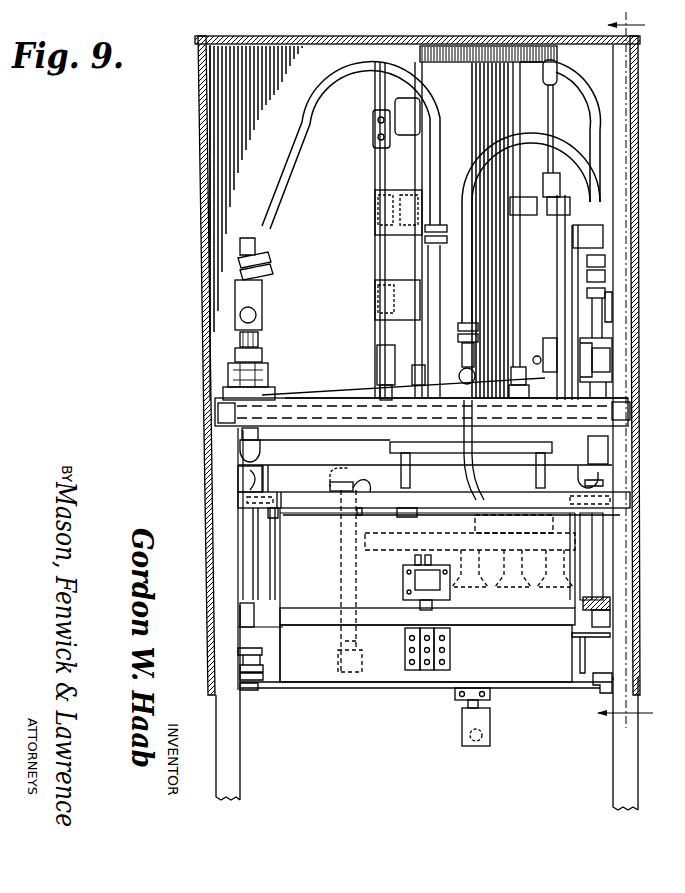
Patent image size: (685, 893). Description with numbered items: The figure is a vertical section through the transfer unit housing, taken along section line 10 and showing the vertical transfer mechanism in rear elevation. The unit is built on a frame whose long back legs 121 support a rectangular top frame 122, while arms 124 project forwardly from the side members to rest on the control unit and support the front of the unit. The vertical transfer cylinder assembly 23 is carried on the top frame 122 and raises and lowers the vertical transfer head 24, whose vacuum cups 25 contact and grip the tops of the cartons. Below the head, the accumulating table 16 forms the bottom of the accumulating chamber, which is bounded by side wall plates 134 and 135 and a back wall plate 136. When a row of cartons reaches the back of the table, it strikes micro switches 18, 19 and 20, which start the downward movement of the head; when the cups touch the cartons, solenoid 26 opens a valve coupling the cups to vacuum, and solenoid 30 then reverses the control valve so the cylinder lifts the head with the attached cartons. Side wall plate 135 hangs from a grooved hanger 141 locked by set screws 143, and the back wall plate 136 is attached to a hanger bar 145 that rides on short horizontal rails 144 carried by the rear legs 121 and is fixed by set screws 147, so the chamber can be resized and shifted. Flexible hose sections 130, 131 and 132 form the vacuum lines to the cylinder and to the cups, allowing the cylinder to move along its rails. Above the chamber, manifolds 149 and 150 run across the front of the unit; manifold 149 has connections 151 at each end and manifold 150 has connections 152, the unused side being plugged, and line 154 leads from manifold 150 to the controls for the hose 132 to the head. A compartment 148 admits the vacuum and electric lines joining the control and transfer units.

The section line 10- 10 is at (626, 376).
The accumulating table 16 is at (513, 688).
The micro switch 18 is at (414, 670).
The micro switch 19 is at (426, 670).
The micro switch 20 is at (441, 670).
The vertical transfer cylinder assembly 23 is at (492, 130).
The vertical transfer head 24 is at (493, 545).
The vacuum cups 25 is at (563, 590).
The solenoid 26 is at (258, 365).
The solenoid 30 is at (614, 361).
The back legs 121 is at (232, 778).
The top frame 122 is at (333, 405).
The arms 124 is at (600, 690).
The flexible hose section 130 is at (597, 177).
The flexible hose section 131 is at (590, 104).
The flexible hose section 132 is at (330, 70).
The side wall plate 134 is at (580, 660).
The side wall plate 135 is at (357, 594).
The back wall plate 136 is at (377, 667).
The hanger 141 is at (375, 493).
The set screws 143 is at (330, 477).
The horizontal rails 144 is at (607, 617).
The hanger bar 145 is at (332, 620).
The set screws 147 is at (605, 600).
The compartment 148 is at (248, 567).
The manifold 149 is at (368, 474).
The manifold 150 is at (353, 461).
The connections 151 is at (616, 497).
The connections 152 is at (610, 478).
The line 154 is at (262, 445).